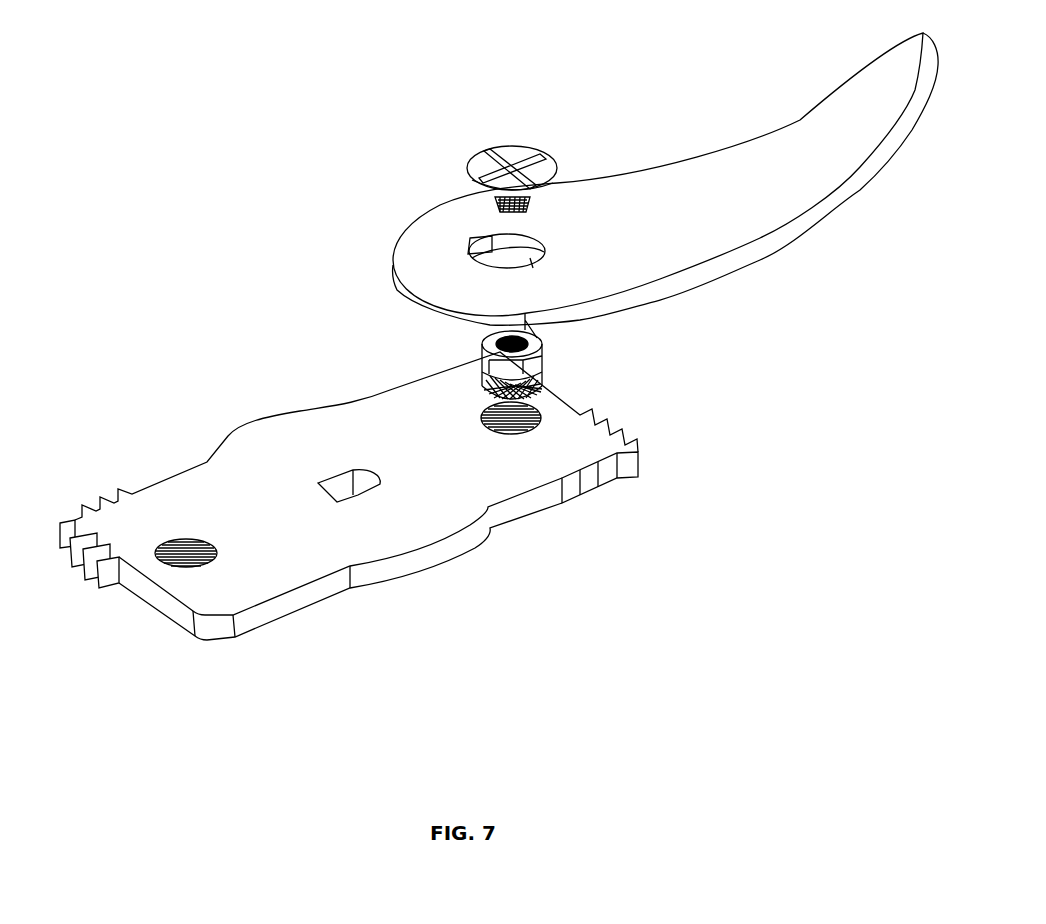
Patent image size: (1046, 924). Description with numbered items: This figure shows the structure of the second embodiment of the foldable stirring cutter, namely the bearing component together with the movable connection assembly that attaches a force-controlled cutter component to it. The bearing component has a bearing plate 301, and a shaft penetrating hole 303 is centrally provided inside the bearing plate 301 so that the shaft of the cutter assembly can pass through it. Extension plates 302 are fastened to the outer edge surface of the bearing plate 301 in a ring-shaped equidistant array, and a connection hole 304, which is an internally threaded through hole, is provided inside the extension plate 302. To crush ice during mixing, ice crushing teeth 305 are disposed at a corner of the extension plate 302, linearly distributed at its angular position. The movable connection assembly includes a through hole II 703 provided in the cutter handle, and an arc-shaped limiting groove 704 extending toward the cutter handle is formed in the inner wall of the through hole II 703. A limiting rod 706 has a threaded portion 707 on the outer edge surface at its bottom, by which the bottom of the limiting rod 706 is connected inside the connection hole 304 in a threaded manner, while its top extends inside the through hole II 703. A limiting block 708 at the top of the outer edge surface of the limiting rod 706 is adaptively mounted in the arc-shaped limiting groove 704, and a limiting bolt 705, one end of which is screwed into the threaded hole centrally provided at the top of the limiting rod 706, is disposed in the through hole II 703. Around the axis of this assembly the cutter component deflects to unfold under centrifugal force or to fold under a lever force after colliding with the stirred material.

The bearing plate 301 is at (403, 532).
The extension plate 302 is at (273, 577).
The shaft penetrating hole 303 is at (332, 482).
The connection hole 304 is at (184, 560).
The ice crushing teeth 305 is at (607, 482).
The through hole II 703 is at (494, 238).
The arc-shaped limiting groove 704 is at (470, 245).
The limiting bolt 705 is at (507, 150).
The limiting rod 706 is at (483, 343).
The threaded portion 707 is at (481, 366).
The limiting block 708 is at (543, 364).